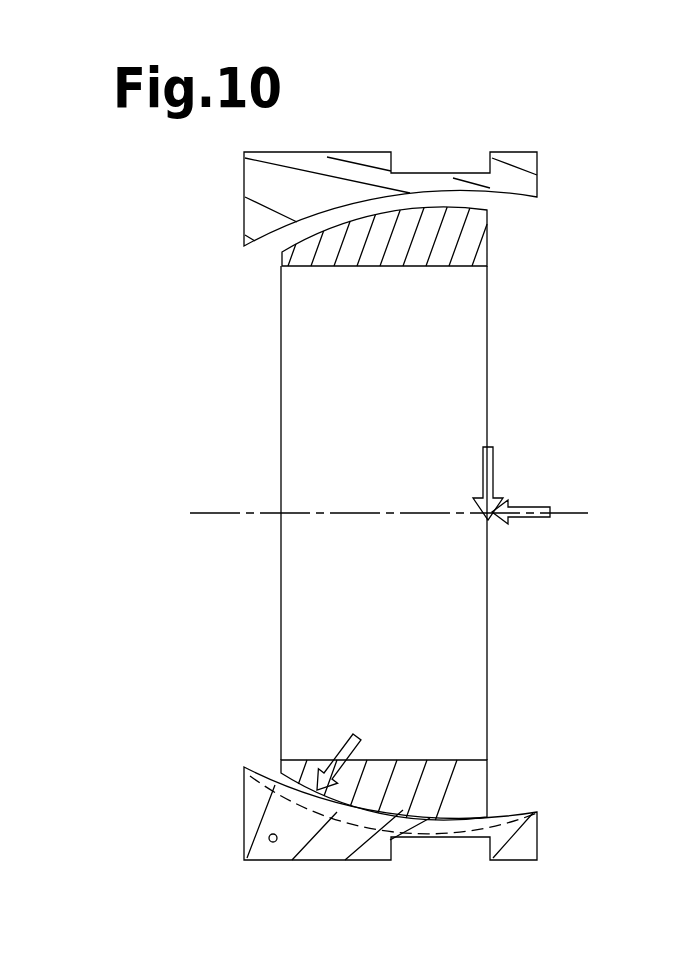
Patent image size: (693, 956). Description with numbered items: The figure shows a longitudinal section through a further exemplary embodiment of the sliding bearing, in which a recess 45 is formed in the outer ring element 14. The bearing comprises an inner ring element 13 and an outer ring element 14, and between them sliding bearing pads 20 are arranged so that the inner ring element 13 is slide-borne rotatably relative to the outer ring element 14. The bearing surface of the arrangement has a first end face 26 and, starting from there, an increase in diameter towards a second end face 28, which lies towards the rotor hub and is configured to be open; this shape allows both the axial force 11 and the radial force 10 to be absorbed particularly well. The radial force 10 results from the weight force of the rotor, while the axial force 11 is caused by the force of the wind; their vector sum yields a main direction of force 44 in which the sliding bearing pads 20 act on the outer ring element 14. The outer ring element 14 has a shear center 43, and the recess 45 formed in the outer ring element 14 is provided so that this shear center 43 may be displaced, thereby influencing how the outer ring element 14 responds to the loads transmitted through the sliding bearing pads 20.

The radial force 10 is at (493, 460).
The axial force 11 is at (538, 517).
The inner ring element 13 is at (465, 407).
The outer ring element 14 is at (322, 162).
The sliding bearing pads 20 is at (480, 240).
The first end face 26 is at (222, 269).
The second end face 28 is at (568, 227).
The shear center 43 is at (270, 843).
The main direction of force 44 is at (343, 740).
The recess 45 is at (465, 863).